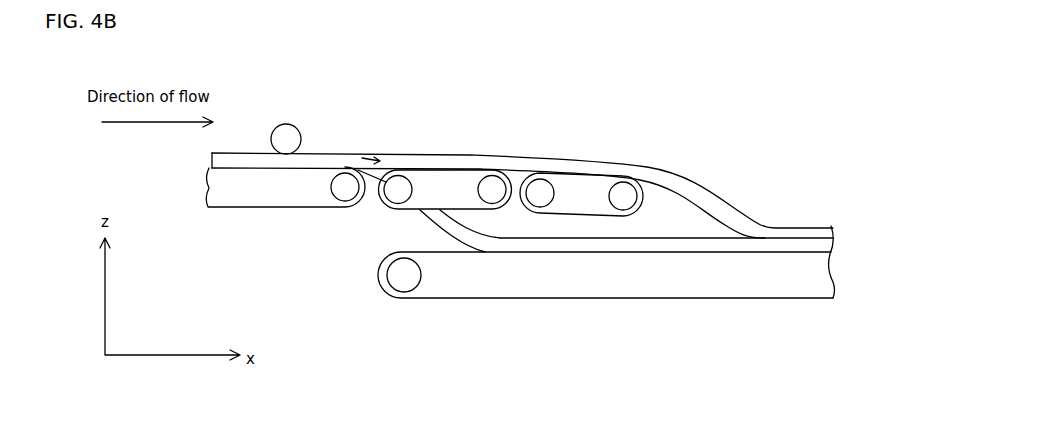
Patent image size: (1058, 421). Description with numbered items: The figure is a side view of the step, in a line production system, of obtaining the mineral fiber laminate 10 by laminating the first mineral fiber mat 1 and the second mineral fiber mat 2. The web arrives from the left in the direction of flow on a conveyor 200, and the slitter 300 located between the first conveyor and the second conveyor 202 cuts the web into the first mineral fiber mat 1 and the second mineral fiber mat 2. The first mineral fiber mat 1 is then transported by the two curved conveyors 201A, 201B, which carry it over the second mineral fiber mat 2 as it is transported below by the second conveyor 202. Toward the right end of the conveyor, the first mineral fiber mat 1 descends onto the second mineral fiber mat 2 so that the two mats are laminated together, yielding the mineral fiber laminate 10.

The first mineral fiber mat 1 is at (833, 230).
The second mineral fiber mat 2 is at (900, 187).
The mineral fiber laminate 10 is at (587, 225).
The conveyor belt 200 is at (270, 182).
The curved conveyor 201A is at (443, 193).
The curved conveyor 201B is at (580, 200).
The second conveyor 202 is at (467, 287).
The slitter 300 is at (290, 140).